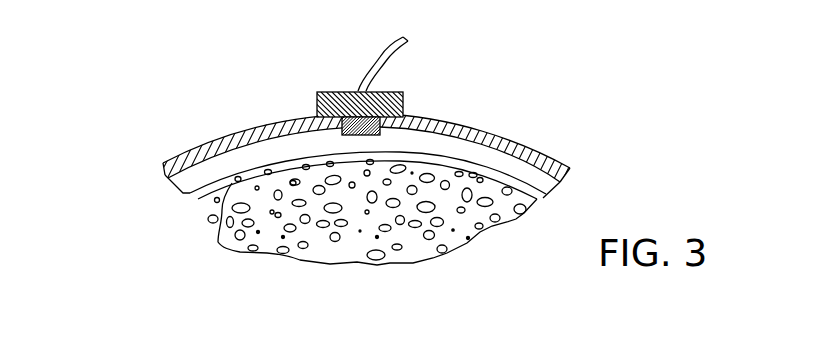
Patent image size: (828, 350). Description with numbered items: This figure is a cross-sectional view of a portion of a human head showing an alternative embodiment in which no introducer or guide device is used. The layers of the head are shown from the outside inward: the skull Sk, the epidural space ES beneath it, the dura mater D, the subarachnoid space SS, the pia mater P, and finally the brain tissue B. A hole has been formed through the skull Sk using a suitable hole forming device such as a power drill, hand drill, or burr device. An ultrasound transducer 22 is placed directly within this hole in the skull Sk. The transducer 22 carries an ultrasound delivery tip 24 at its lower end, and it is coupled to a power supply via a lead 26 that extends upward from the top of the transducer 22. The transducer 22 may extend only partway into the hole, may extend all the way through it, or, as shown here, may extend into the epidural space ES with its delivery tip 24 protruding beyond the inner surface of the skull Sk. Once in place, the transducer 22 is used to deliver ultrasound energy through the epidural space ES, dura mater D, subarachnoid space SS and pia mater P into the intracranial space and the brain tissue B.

The ultrasound transducer 22 is at (314, 106).
The ultrasound delivery tip 24 is at (384, 134).
The lead 26 is at (376, 59).
The skull Sk is at (450, 116).
The epidural space ES is at (496, 158).
The dura mater D is at (186, 202).
The pia mater P is at (199, 208).
The subarachnoid space SS is at (240, 178).
The brain tissue B is at (362, 248).